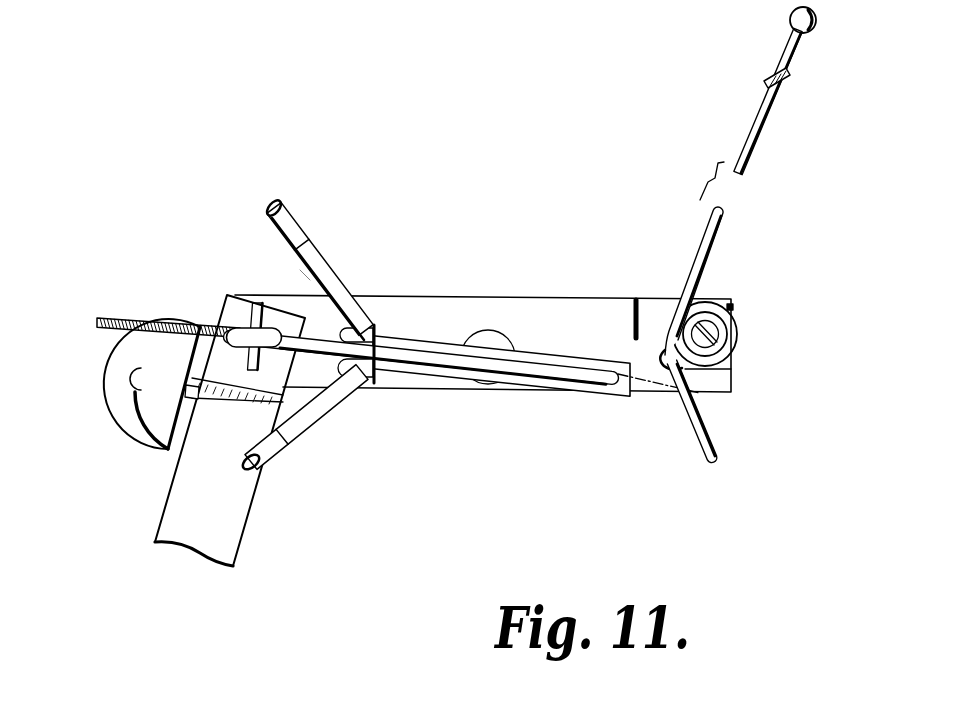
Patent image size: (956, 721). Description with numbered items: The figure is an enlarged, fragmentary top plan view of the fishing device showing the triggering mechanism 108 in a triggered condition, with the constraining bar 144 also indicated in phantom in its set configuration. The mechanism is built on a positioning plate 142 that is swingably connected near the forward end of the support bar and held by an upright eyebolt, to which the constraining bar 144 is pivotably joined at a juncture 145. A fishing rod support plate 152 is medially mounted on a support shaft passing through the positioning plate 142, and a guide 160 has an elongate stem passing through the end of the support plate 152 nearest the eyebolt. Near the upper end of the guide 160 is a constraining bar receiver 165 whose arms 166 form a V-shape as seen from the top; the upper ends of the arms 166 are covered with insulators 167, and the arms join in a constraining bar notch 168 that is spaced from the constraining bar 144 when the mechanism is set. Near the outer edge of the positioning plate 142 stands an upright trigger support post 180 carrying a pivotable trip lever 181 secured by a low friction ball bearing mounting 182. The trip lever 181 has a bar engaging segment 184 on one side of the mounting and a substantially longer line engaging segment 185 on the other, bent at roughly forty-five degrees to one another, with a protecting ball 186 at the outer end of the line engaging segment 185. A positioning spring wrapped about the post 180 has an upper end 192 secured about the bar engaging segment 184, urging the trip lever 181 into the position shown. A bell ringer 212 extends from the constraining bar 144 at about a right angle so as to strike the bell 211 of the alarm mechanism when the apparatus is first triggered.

The triggering mechanism 108 is at (456, 283).
The positioning plate 142 is at (544, 299).
The constraining bar 144 is at (434, 345).
The juncture 145 is at (253, 300).
The fishing rod support plate 152 is at (595, 394).
The guide 160 is at (308, 228).
The constraining bar receiver 165 is at (272, 228).
The arms 166 is at (315, 418).
The insulators 167 is at (284, 204).
The constraining bar notch 168 is at (380, 330).
The trigger support post 180 is at (727, 334).
The trip lever 181 is at (722, 228).
The ball bearing mounting 182 is at (739, 320).
The bar engaging segment 184 is at (713, 438).
The line engaging segment 185 is at (766, 117).
The protecting ball 186 is at (791, 16).
The upper end of positioning spring 192 is at (660, 352).
The bell 211 is at (160, 447).
The bell ringer 212 is at (146, 312).